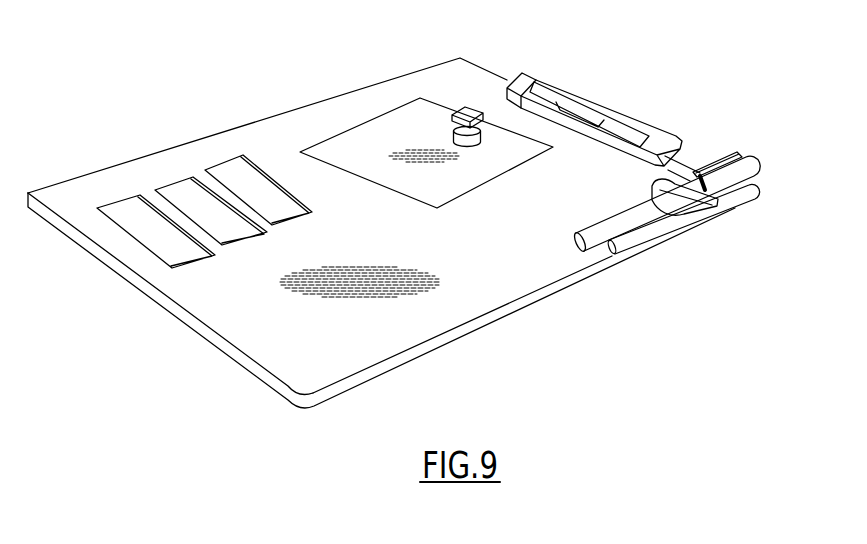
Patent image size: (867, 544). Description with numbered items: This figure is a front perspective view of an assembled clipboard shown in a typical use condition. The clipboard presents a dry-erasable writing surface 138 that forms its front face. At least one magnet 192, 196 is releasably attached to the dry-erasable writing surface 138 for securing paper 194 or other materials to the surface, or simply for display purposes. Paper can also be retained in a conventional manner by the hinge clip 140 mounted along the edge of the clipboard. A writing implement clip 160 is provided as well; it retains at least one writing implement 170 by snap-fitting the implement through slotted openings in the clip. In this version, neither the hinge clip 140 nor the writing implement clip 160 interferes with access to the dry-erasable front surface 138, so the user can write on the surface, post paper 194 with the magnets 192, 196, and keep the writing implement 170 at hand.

The dry-erasable writing surface 138 is at (362, 343).
The hinge clip 140 is at (635, 122).
The writing implement clip 160 is at (706, 178).
The writing implement 170 is at (730, 192).
The magnet 192 is at (457, 110).
The paper 194 is at (385, 135).
The magnet 196 is at (237, 173).